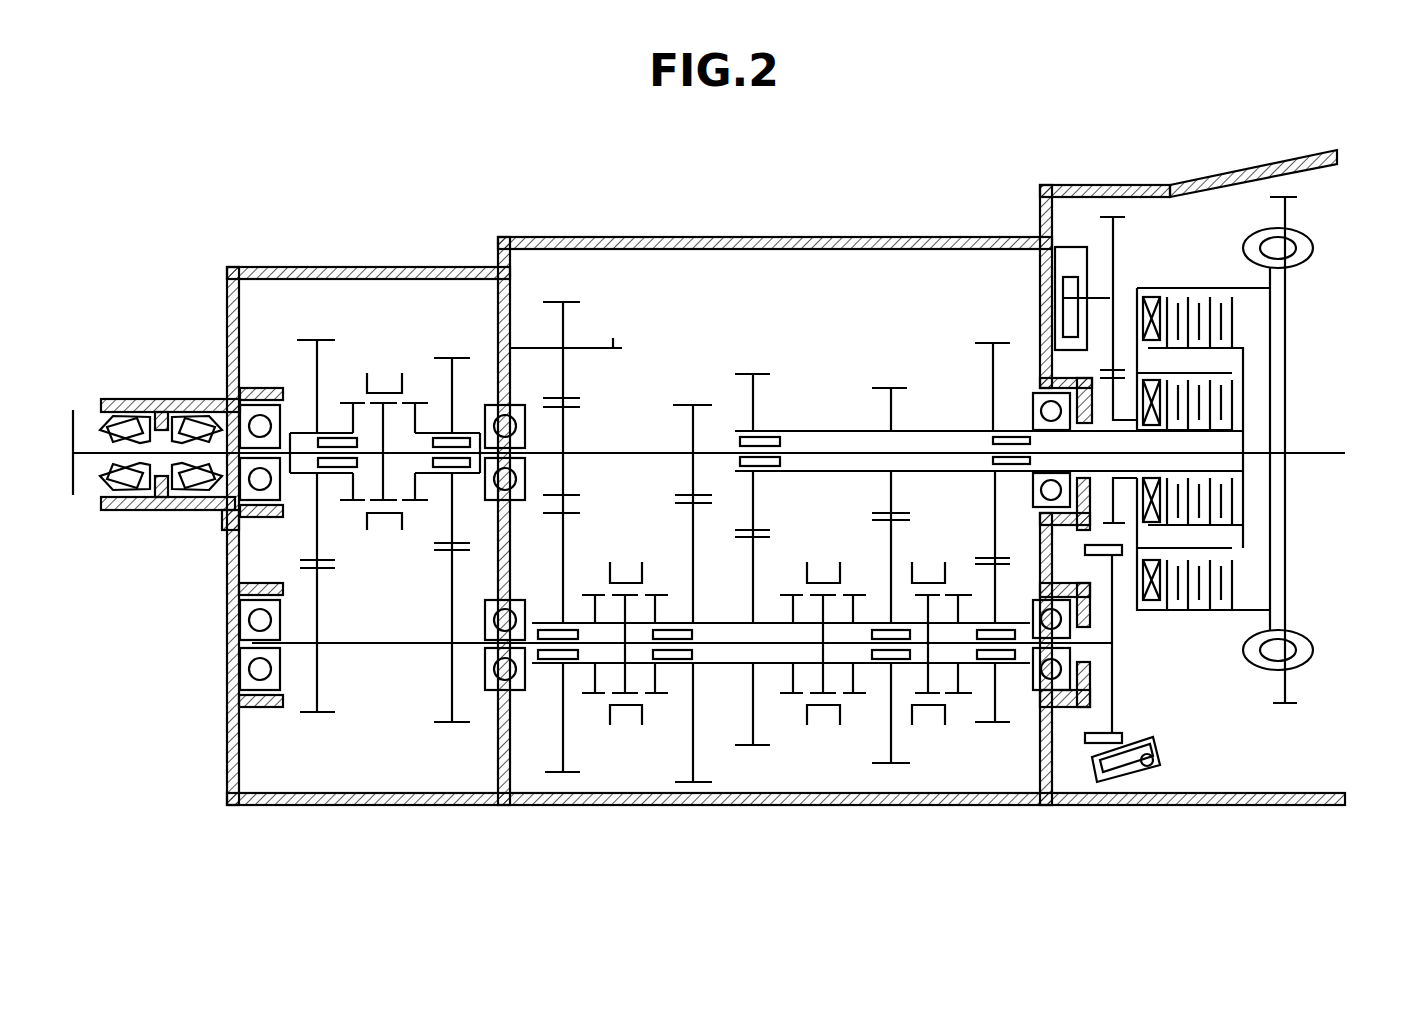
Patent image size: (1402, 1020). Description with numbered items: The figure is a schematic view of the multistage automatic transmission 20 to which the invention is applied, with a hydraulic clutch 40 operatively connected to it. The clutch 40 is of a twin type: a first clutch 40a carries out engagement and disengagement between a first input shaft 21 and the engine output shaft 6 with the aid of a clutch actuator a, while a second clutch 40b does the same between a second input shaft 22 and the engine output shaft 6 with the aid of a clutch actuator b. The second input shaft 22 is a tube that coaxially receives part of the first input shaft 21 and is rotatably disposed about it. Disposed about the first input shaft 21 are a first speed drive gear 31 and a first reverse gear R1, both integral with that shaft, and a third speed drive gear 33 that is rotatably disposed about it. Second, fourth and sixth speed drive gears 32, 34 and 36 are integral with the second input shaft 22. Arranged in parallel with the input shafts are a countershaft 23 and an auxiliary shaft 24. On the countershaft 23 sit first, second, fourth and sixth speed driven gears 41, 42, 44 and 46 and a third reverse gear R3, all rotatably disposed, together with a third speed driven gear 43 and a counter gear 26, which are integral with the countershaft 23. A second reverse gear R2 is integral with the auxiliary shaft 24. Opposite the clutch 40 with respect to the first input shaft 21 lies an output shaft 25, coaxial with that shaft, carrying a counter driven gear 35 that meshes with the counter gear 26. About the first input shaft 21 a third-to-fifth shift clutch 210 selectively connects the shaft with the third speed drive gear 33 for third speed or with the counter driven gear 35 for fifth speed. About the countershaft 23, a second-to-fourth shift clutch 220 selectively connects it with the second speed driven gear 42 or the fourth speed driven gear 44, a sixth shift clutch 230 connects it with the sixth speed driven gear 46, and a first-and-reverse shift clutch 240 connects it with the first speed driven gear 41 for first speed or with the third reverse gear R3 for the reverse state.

The multistage automatic transmission 20 is at (968, 146).
The first input shaft 21 is at (620, 452).
The second input shaft 22 is at (805, 430).
The countershaft 23 is at (375, 645).
The auxiliary shaft 24 is at (613, 346).
The output shaft 25 is at (73, 428).
The counter gear 26 is at (311, 712).
The first speed drive gear 31 is at (708, 405).
The second speed drive gear 32 is at (905, 388).
The third speed drive gear 33 is at (468, 358).
The fourth speed drive gear 34 is at (770, 373).
The counter driven gear 35 is at (333, 340).
The sixth speed drive gear 36 is at (1010, 343).
The hydraulic clutch 40 is at (1258, 397).
The first clutch 40a is at (1230, 325).
The second clutch 40b is at (1222, 518).
The first speed driven gear 41 is at (700, 783).
The second speed driven gear 42 is at (900, 765).
The third speed driven gear 43 is at (445, 722).
The fourth speed driven gear 44 is at (770, 745).
The sixth speed driven gear 46 is at (1003, 725).
The 3-5 shift clutch 210 is at (385, 522).
The 2-4 shift clutch 220 is at (825, 718).
The 6-shift clutch 230 is at (928, 575).
The 1-R shift clutch 240 is at (625, 575).
The first reverse gear R1 is at (567, 463).
The second reverse gear R2 is at (572, 300).
The third reverse gear R3 is at (572, 773).
The engine output shaft 6 is at (1347, 452).
The clutch actuator a is at (1157, 600).
The clutch actuator b is at (1150, 525).